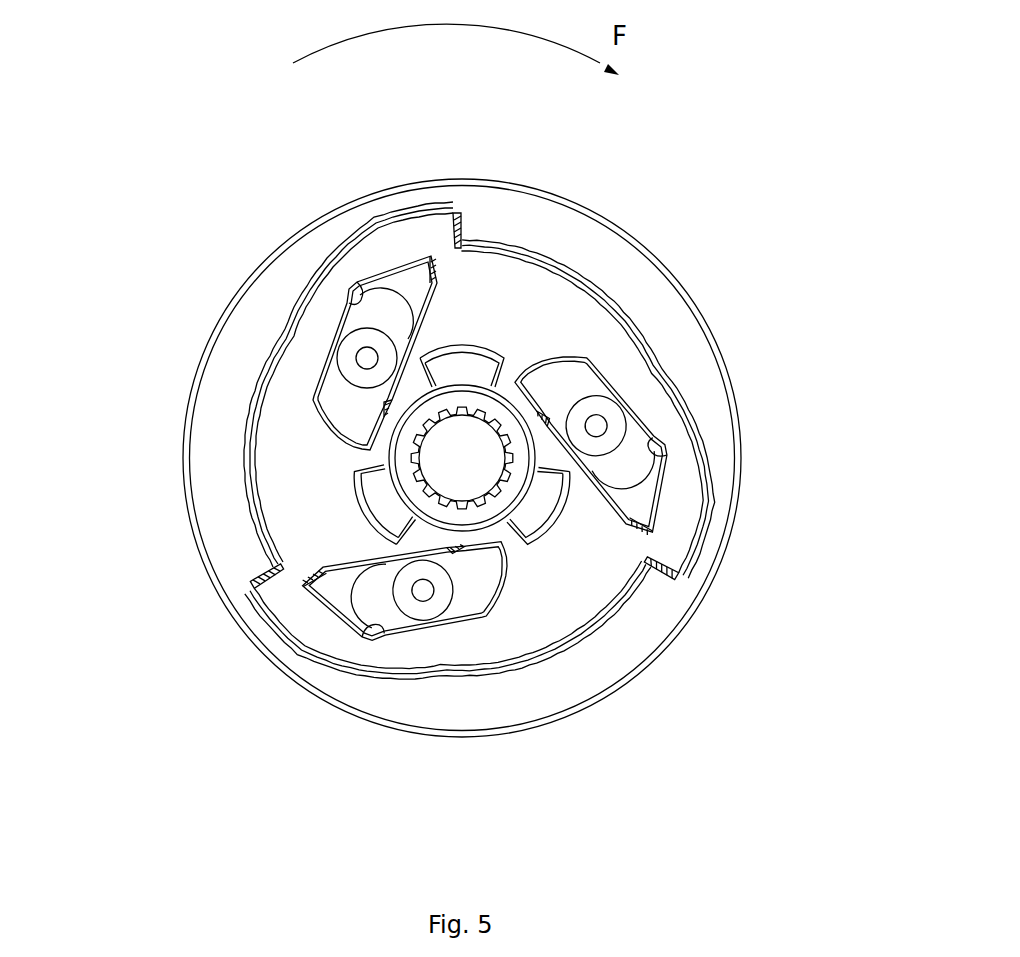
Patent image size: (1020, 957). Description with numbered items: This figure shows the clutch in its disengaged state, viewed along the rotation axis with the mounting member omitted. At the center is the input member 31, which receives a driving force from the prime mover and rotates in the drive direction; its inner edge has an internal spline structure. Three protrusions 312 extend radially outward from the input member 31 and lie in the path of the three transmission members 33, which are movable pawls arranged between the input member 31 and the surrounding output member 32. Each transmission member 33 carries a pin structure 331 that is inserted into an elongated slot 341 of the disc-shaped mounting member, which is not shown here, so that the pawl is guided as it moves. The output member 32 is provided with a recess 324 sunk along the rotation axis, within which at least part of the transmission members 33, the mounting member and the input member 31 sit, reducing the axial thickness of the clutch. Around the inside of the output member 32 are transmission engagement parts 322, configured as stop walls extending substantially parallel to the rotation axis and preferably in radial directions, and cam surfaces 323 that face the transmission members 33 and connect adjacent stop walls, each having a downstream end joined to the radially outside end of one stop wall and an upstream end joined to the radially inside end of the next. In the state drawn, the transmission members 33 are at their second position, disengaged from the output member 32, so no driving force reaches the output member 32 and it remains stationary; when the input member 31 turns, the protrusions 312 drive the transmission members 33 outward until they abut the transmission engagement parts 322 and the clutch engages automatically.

The input member 31 is at (492, 512).
The protrusions 312 is at (547, 527).
The output member 32 is at (603, 221).
The transmission engagement parts 322 is at (452, 230).
The cam surfaces 323 is at (240, 458).
The recess 324 is at (562, 318).
The transmission members 33 is at (395, 255).
The pin structures 331 is at (343, 340).
The elongated slots 341 is at (355, 293).